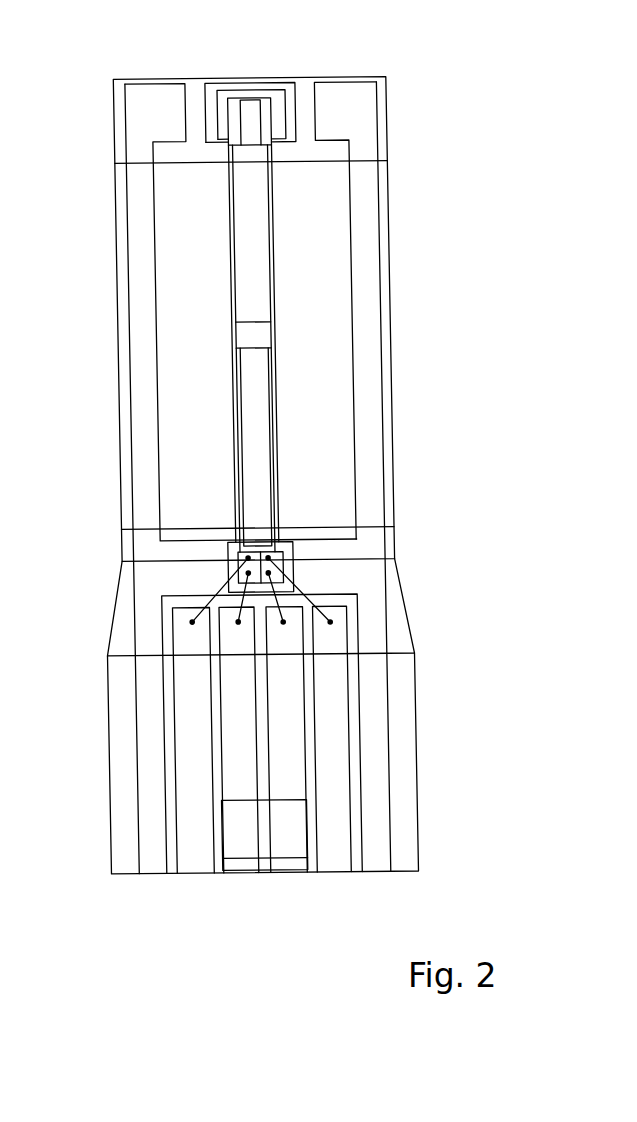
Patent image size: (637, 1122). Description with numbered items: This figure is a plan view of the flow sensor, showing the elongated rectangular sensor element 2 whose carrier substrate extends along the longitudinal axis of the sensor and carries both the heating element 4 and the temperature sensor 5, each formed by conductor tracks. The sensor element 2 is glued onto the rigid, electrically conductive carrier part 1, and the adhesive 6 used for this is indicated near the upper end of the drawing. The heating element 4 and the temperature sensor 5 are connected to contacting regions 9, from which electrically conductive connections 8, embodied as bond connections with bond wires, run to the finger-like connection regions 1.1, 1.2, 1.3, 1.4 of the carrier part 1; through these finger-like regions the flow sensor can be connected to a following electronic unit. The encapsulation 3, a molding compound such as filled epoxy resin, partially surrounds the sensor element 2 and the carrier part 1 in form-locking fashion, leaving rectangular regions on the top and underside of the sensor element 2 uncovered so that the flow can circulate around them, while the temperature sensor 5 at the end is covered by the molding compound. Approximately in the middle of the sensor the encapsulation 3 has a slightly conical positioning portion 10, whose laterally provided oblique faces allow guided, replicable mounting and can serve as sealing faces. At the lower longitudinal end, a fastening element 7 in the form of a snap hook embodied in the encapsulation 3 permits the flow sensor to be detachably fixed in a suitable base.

The carrier part 1 is at (138, 197).
The sensor element 2 is at (248, 247).
The encapsulation 3 is at (330, 242).
The heating element 4 is at (262, 335).
The temperature sensor 5 is at (249, 122).
The adhesive 6 is at (277, 103).
The fastening element 7 is at (287, 847).
The electrically conductive connection 8 is at (330, 622).
The contacting regions 9 is at (270, 557).
The positioning portion 10 is at (123, 628).
The finger-like connection region 1.1 is at (190, 717).
The finger-like connection region 1.2 is at (233, 758).
The finger-like connection region 1.3 is at (292, 758).
The finger-like connection region 1.4 is at (332, 708).